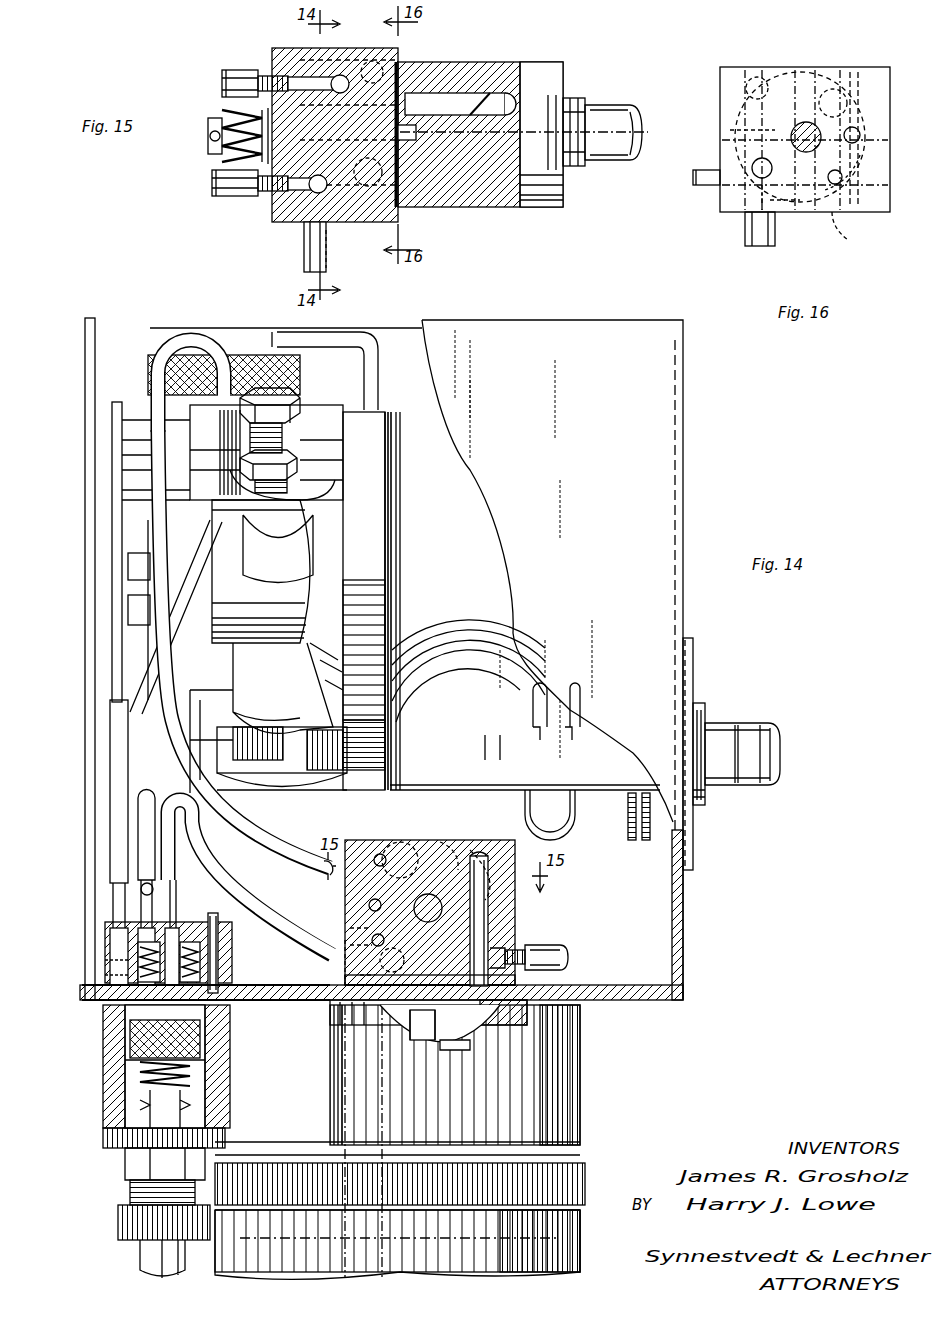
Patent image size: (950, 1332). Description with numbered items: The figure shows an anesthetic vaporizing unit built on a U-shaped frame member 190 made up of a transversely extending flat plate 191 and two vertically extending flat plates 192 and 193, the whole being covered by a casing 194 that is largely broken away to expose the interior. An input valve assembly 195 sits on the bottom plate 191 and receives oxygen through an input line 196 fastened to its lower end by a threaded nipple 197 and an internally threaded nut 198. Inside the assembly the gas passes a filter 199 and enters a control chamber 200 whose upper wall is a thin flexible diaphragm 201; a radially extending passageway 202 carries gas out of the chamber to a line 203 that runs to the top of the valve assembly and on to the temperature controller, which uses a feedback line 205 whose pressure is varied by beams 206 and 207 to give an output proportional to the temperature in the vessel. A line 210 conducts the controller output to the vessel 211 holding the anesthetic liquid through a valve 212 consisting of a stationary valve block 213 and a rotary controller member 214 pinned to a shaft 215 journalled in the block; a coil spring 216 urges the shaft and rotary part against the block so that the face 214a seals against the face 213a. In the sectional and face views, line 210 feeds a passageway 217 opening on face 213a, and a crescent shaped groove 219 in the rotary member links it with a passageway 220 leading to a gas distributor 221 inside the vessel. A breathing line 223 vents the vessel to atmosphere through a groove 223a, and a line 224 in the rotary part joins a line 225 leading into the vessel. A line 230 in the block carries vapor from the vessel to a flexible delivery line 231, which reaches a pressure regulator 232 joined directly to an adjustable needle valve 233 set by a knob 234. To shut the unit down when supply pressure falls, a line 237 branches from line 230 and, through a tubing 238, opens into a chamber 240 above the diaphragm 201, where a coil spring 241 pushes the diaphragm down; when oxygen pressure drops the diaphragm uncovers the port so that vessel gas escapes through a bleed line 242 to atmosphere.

In FIG. 14, the U-shaped frame member 190 is at (694, 903).
In FIG. 14, the transversely extending flat plate 191 is at (636, 1002).
In FIG. 14, the vertically extending flat plate 192 is at (686, 938).
In FIG. 14, the vertically extending flat plate 193 is at (90, 320).
In FIG. 14, the casing 194 is at (672, 400).
In FIG. 14, the input valve assembly 195 is at (244, 1084).
In FIG. 14, the input line 196 is at (140, 1256).
In FIG. 14, the threaded nipple 197 is at (130, 1176).
In FIG. 14, the internally threaded nut 198 is at (118, 1218).
In FIG. 14, the filter 199 is at (130, 1035).
In FIG. 14, the control chamber 200 is at (150, 1006).
In FIG. 14, the flexible diaphragm 201 is at (200, 974).
In FIG. 14, the radially extending passageway 202 is at (94, 990).
In FIG. 14, the line 203 is at (214, 548).
In FIG. 14, the feedback line 205 is at (360, 326).
In FIG. 14, the beam 206 is at (128, 565).
In FIG. 14, the beam 207 is at (128, 605).
In FIG. 15, the line 210 is at (262, 68).
In FIG. 14, the vessel 211 is at (574, 1276).
In FIG. 14, the valve 212 is at (528, 920).
In FIG. 15, the stationary valve block 213 is at (368, 48).
In FIG. 14, the stationary valve block 213 is at (516, 896).
In FIG. 15, the face of stationary block 213a is at (404, 214).
In FIG. 16, the face of stationary block 213a is at (866, 212).
In FIG. 15, the rotary controller member 214 is at (500, 208).
In FIG. 16, the rotary controller member 214 is at (852, 68).
In FIG. 15, the complementary face of controller 214a is at (416, 70).
In FIG. 15, the shaft 215 is at (228, 112).
In FIG. 16, the shaft 215 is at (790, 130).
In FIG. 14, the shaft 215 is at (440, 890).
In FIG. 15, the coil spring 216 is at (218, 148).
In FIG. 15, the passageway 217 is at (296, 88).
In FIG. 16, the passageway 217 is at (860, 134).
In FIG. 14, the passageway 217 is at (392, 830).
In FIG. 15, the crescent shaped groove 219 is at (482, 88).
In FIG. 16, the crescent shaped groove 219 is at (846, 176).
In FIG. 14, the crescent shaped groove 219 is at (346, 924).
In FIG. 15, the passageway 220 is at (412, 60).
In FIG. 16, the passageway 220 is at (852, 236).
In FIG. 14, the passageway 220 is at (346, 980).
In FIG. 14, the gas distributor 221 is at (540, 1236).
In FIG. 16, the breathing line 223 is at (776, 214).
In FIG. 14, the breathing line 223 is at (444, 1040).
In FIG. 16, the groove 223a is at (760, 74).
In FIG. 14, the groove 223a is at (446, 840).
In FIG. 15, the line 224 is at (578, 98).
In FIG. 16, the line 224 is at (820, 66).
In FIG. 15, the line 225 is at (332, 226).
In FIG. 16, the line 225 is at (752, 166).
In FIG. 14, the line 225 is at (470, 1048).
In FIG. 15, the line 230 is at (308, 192).
In FIG. 16, the line 230 is at (730, 124).
In FIG. 14, the line 230 is at (486, 880).
In FIG. 15, the flexible delivery line 231 is at (242, 196).
In FIG. 14, the flexible delivery line 231 is at (150, 378).
In FIG. 14, the pressure regulator 232 is at (502, 668).
In FIG. 14, the adjustable needle valve 233 is at (284, 782).
In FIG. 14, the knob 234 is at (762, 788).
In FIG. 15, the line 237 is at (303, 258).
In FIG. 16, the line 237 is at (700, 186).
In FIG. 14, the line 237 is at (552, 948).
In FIG. 14, the tubing 238 is at (252, 910).
In FIG. 14, the chamber 240 is at (200, 960).
In FIG. 14, the coil spring 241 is at (160, 940).
In FIG. 14, the bleed line 242 is at (104, 964).